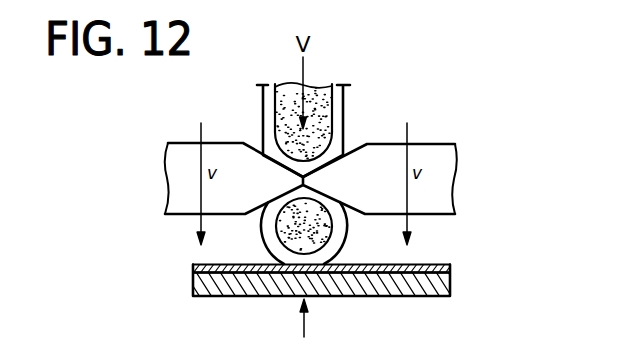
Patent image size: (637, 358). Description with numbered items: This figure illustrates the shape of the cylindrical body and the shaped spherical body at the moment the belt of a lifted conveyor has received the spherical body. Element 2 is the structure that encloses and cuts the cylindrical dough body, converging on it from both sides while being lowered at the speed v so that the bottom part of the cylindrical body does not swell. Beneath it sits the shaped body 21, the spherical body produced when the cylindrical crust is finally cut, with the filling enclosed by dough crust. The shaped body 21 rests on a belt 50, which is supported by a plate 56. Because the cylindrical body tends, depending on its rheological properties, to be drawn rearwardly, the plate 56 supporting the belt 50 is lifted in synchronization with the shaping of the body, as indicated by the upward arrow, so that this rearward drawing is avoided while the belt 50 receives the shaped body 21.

The electrode 2 is at (440, 190).
The shaped body 21 is at (352, 243).
The belt 50 is at (440, 264).
The plate 56 is at (413, 282).